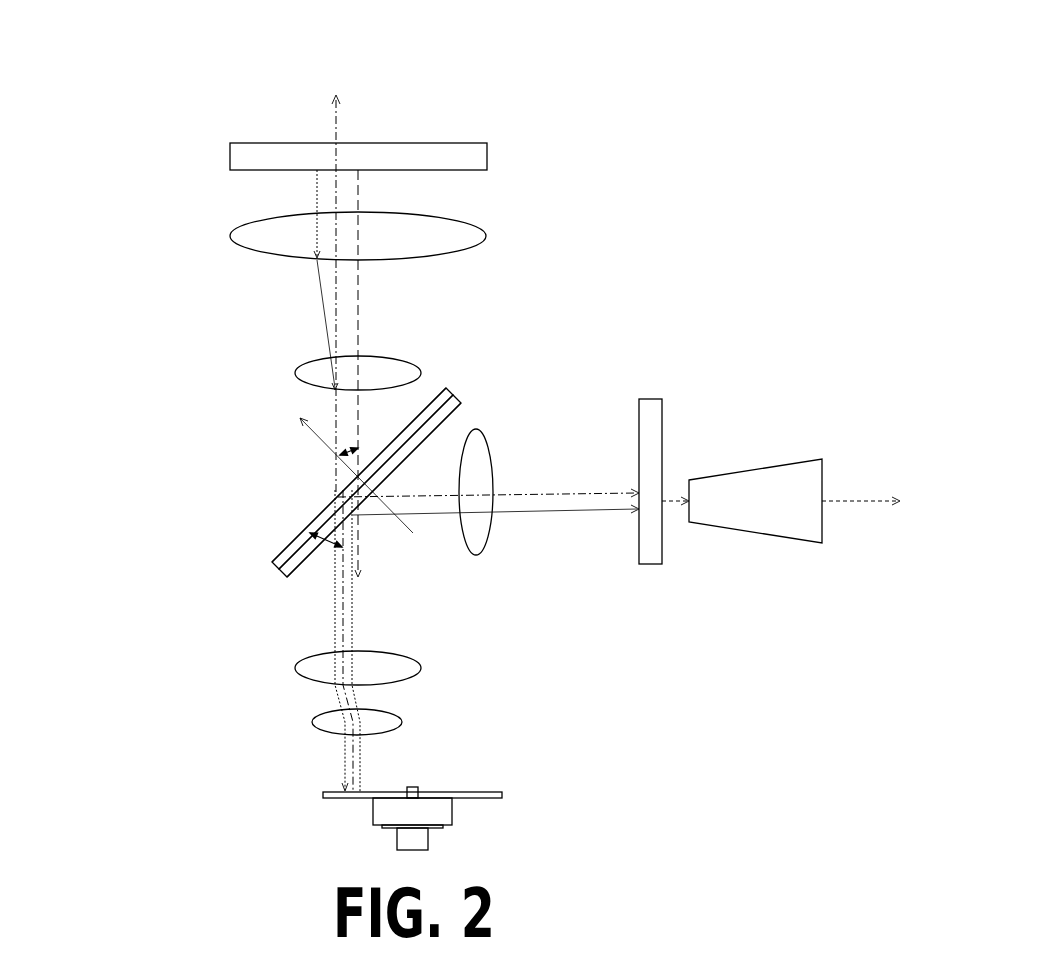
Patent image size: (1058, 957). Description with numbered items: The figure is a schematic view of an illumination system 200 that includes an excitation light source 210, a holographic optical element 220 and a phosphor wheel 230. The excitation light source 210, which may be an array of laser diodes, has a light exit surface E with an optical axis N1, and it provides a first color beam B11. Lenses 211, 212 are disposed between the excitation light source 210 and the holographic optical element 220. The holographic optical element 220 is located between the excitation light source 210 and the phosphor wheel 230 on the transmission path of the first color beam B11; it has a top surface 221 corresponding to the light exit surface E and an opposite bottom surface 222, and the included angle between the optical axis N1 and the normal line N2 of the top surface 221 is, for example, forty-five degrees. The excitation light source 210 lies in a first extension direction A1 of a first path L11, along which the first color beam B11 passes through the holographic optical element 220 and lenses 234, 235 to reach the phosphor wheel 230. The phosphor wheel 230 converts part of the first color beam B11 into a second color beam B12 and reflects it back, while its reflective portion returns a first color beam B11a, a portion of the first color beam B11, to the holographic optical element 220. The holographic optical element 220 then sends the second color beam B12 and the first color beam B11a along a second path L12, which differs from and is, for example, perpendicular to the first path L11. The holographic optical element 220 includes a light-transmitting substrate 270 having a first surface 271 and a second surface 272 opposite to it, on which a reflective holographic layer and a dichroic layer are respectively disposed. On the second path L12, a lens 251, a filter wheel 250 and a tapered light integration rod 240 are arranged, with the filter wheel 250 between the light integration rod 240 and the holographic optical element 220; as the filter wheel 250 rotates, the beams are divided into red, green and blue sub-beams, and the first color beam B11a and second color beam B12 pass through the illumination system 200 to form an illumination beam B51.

The illumination system 200 is at (112, 44).
The excitation light source 210 is at (275, 160).
The lens 211 is at (258, 242).
The lens 212 is at (303, 378).
The holographic optical element 220 is at (341, 444).
The top surface 221 is at (283, 547).
The bottom surface 222 is at (284, 575).
The phosphor wheel 230 is at (485, 792).
The lens 234 is at (325, 722).
The lens 235 is at (302, 668).
The light integration rod 240 is at (780, 480).
The filter wheel 250 is at (651, 410).
The lens 251 is at (480, 540).
The substrate 270 is at (419, 431).
The first surface 271 is at (424, 413).
The second surface 272 is at (427, 437).
The first extension direction A1 is at (337, 130).
The first color beam B11 is at (317, 198).
The first color beam B11a is at (346, 623).
The second color beam B12 is at (355, 598).
The illumination beam B51 is at (875, 500).
The light exit surface E is at (461, 172).
The first path L11 is at (319, 670).
The second path L12 is at (575, 482).
The optical axis N1 is at (360, 538).
The normal line N2 is at (322, 445).